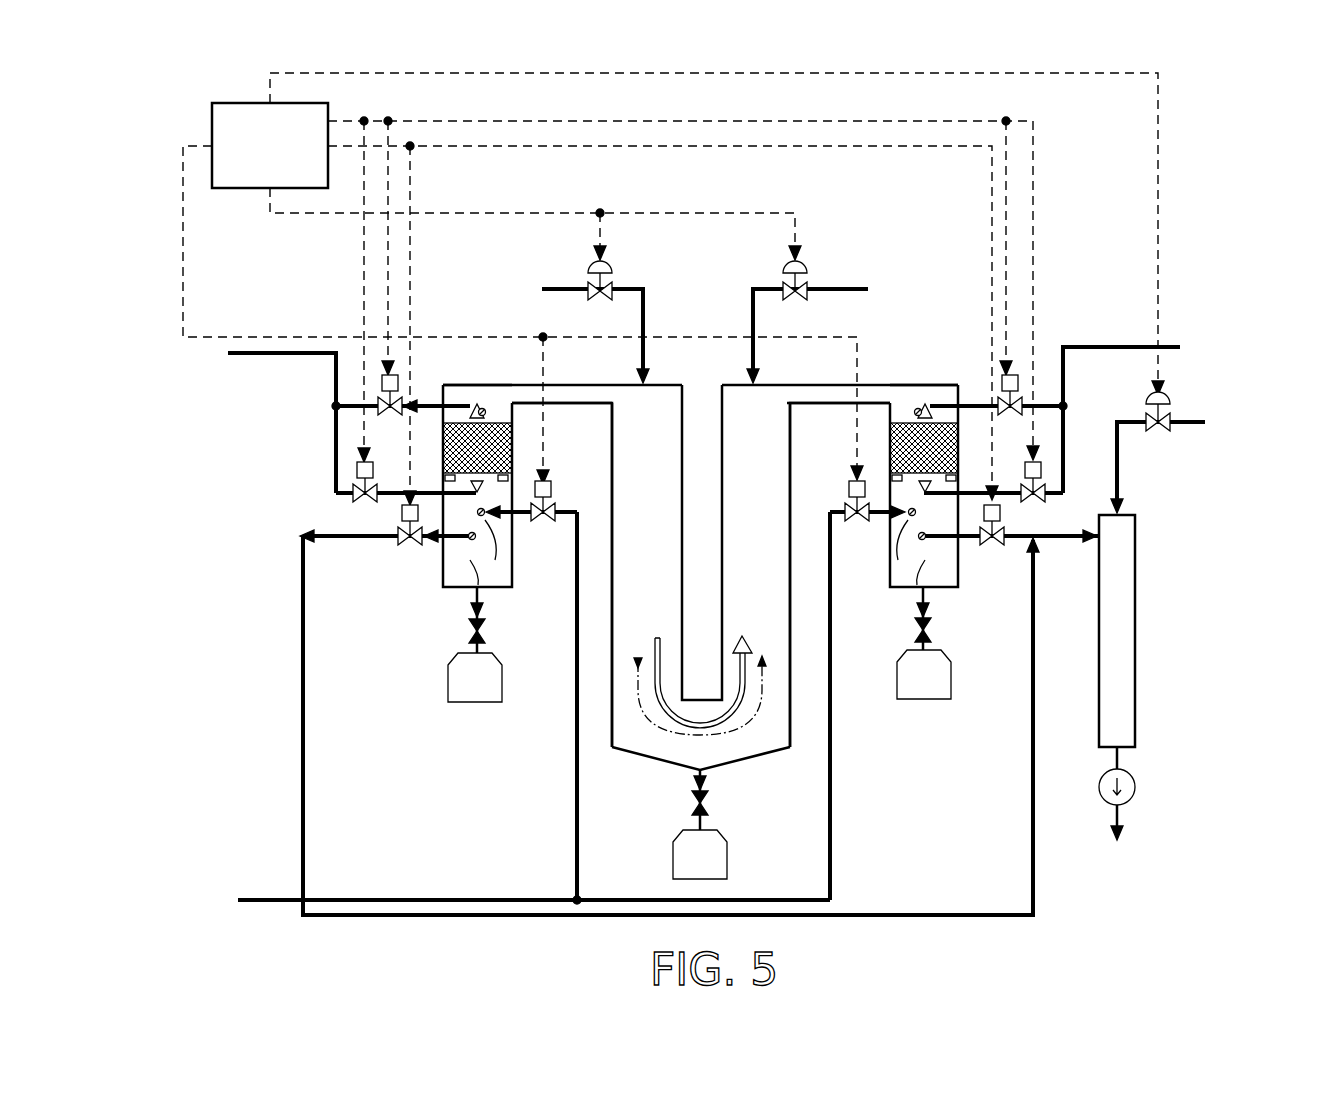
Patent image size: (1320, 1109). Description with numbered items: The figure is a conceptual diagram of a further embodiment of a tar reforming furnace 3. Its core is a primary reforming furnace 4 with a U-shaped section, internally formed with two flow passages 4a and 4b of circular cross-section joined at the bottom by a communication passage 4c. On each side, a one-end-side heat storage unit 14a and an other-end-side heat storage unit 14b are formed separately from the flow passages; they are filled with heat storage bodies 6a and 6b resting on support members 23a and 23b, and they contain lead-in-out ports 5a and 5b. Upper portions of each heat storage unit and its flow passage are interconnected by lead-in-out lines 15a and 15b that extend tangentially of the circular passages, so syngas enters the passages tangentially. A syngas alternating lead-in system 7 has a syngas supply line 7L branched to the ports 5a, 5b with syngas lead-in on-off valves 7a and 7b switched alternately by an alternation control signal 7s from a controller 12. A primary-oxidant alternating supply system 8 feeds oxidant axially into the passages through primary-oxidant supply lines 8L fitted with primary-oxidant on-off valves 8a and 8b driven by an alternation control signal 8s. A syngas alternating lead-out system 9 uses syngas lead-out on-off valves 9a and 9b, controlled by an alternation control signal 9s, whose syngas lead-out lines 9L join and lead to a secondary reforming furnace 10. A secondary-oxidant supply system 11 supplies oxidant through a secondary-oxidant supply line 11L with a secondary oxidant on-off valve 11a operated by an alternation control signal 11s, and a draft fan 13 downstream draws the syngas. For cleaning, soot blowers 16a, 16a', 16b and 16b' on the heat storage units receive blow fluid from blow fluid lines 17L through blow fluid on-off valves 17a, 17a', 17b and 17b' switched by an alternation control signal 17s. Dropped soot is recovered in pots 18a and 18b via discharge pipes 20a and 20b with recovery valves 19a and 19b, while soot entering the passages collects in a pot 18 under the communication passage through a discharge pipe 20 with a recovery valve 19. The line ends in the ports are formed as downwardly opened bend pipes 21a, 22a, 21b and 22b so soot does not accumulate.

The tar reforming furnace 3 is at (258, 780).
The primary reforming furnace 4 is at (655, 772).
The one-side flow passage 4a is at (625, 425).
The other-side flow passage 4b is at (778, 427).
The communication passage 4c is at (683, 752).
The one-end-side lead-in-out port 5a is at (458, 558).
The other-end-side lead-in-out port 5b is at (940, 560).
The one-end-side heat storage body 6a is at (446, 457).
The other-end-side heat storage body 6b is at (946, 465).
The syngas alternating lead-in system 7 is at (540, 893).
The syngas lead-in on-off valve 7a is at (556, 508).
The syngas lead-in on-off valve 7b is at (845, 508).
The syngas supply line 7L is at (472, 885).
The alternation control signal 7s is at (183, 240).
The primary-oxidant alternating supply system 8 is at (855, 268).
The primary-oxidant on-off valve 8a is at (608, 287).
The primary-oxidant on-off valve 8b is at (786, 287).
The primary-oxidant supply line 8L is at (750, 315).
The alternation control signal 8s is at (690, 213).
The syngas alternating lead-out system 9 is at (1045, 645).
The syngas lead-out on-off valve 9a is at (408, 548).
The syngas lead-out on-off valve 9b is at (995, 548).
The syngas lead-out line 9L is at (1052, 545).
The alternation control signal 9s is at (523, 150).
The secondary reforming furnace 10 is at (1145, 598).
The secondary-oxidant supply system 11 is at (1186, 462).
The secondary oxidant on-off valve 11a is at (1170, 417).
The secondary-oxidant supply line 11L is at (1197, 430).
The alternation control signal 11s is at (1158, 205).
The controller 12 is at (212, 120).
The draft fan 13 is at (1136, 782).
The one-end-side heat storage unit 14a is at (468, 362).
The other-end-side heat storage unit 14b is at (932, 362).
The lead-in-out line 15a is at (528, 392).
The lead-in-out line 15b is at (870, 392).
The soot blower 16a is at (518, 545).
The soot blower 16a' is at (535, 423).
The soot blower 16b is at (880, 545).
The soot blower 16b' is at (863, 423).
The blow fluid on-off valve 17a is at (396, 494).
The blow fluid on-off valve 17a' is at (392, 361).
The blow fluid on-off valve 17b is at (1008, 495).
The blow fluid on-off valve 17b' is at (1010, 361).
The blow fluid line 17L is at (1090, 355).
The alternation control signal 17s is at (690, 121).
The pot 18 is at (728, 862).
The pot 18a is at (470, 703).
The pot 18b is at (935, 700).
The recovery valve 19 is at (710, 808).
The recovery valve 19a is at (470, 636).
The recovery valve 19b is at (930, 636).
The discharge pipe 20 is at (708, 778).
The discharge pipe 20a is at (472, 608).
The discharge pipe 20b is at (930, 608).
The bend pipe 21a is at (495, 560).
The bend pipe 21b is at (898, 560).
The bend pipe 22a is at (478, 585).
The bend pipe 22b is at (917, 585).
The support member 23a is at (440, 476).
The support member 23b is at (958, 476).